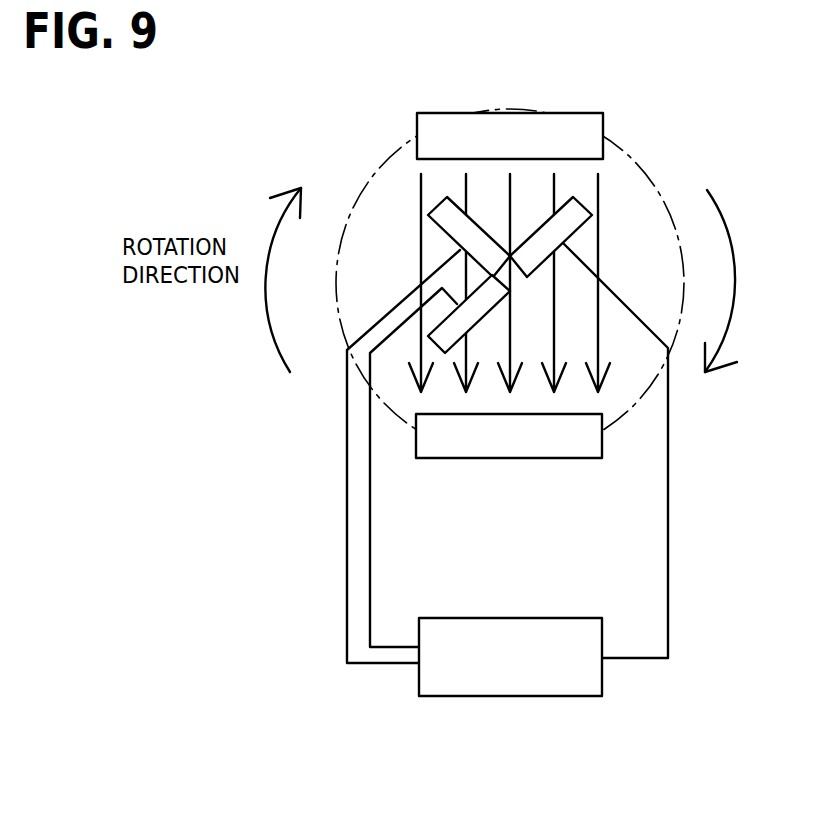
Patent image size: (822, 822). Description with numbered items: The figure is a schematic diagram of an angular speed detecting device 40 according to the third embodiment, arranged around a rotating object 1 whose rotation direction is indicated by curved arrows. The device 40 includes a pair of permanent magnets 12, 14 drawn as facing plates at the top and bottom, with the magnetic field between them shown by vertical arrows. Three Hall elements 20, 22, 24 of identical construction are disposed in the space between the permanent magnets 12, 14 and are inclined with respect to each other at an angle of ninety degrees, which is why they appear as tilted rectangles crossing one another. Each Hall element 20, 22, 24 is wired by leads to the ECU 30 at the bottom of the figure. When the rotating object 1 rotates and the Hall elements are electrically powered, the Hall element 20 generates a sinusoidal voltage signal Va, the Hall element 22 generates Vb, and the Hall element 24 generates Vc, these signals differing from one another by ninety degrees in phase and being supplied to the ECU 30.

The rotating object 1 is at (633, 160).
The permanent magnet 12 is at (497, 113).
The permanent magnet 14 is at (512, 459).
The Hall element 20 is at (433, 225).
The Hall element 22 is at (598, 224).
The Hall element 24 is at (431, 340).
The ECU 30 is at (523, 697).
The angular speed detecting device 40 is at (623, 112).